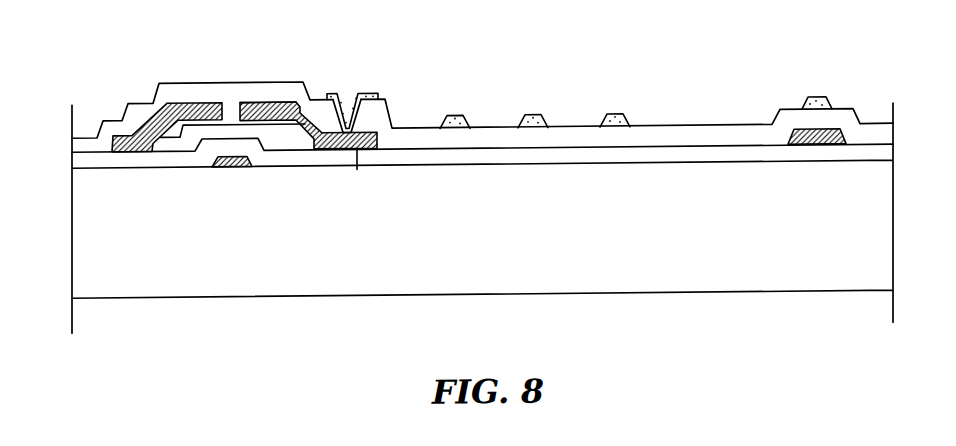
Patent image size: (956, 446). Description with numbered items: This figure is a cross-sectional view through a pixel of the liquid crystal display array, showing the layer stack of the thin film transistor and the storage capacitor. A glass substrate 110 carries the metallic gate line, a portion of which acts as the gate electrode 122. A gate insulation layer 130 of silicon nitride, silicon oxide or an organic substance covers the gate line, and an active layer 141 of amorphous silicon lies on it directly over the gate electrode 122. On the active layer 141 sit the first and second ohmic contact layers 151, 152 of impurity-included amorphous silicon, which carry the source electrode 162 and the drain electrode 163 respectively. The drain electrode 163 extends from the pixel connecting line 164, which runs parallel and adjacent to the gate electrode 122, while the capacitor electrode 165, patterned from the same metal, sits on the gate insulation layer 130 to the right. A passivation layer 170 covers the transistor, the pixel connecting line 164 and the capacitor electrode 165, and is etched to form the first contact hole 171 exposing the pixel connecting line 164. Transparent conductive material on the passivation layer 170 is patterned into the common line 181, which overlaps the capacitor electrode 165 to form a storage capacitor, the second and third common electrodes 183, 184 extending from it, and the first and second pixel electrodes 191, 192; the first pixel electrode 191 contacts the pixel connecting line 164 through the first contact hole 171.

The substrate 110 is at (437, 285).
The gate electrode 122 is at (232, 170).
The gate insulation layer 130 is at (600, 161).
The active layer 141 is at (232, 132).
The first ohmic contact layer 151 is at (145, 126).
The second ohmic contact layer 152 is at (250, 105).
The source electrode 162 is at (183, 108).
The drain electrode 163 is at (280, 106).
The pixel connecting line 164 is at (357, 171).
The capacitor electrode 165 is at (837, 134).
The passivation layer 170 is at (106, 119).
The first contact hole 171 is at (342, 87).
The common line 181 is at (815, 108).
The second common electrode 183 is at (458, 120).
The third common electrode 184 is at (618, 121).
The first pixel electrode 191 is at (377, 96).
The second pixel electrode 192 is at (535, 120).